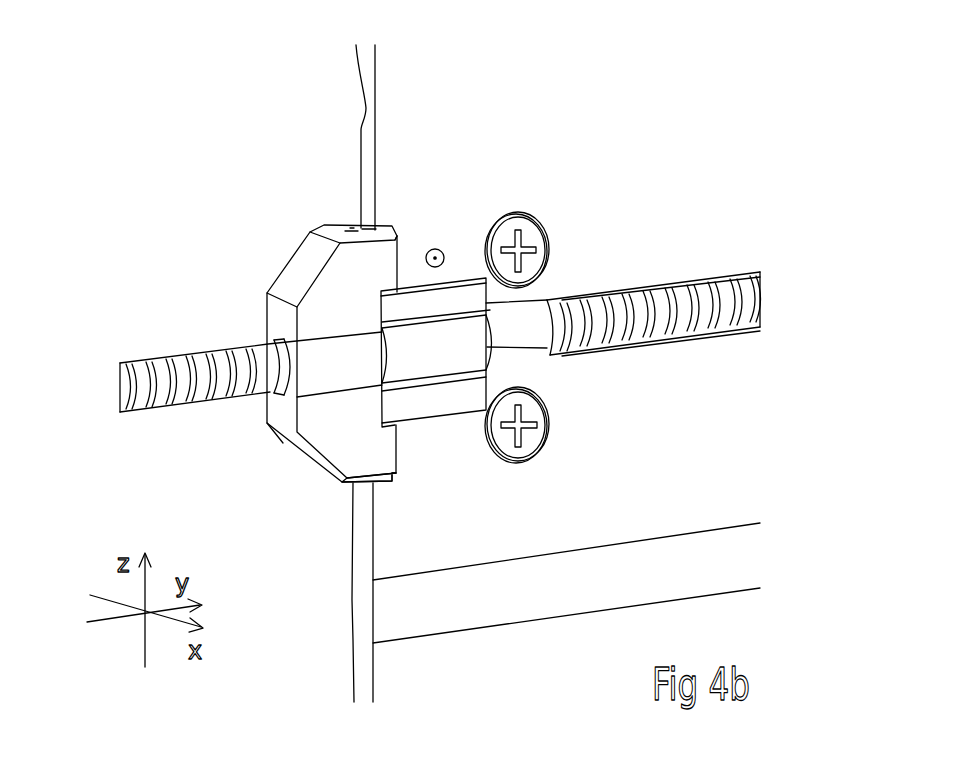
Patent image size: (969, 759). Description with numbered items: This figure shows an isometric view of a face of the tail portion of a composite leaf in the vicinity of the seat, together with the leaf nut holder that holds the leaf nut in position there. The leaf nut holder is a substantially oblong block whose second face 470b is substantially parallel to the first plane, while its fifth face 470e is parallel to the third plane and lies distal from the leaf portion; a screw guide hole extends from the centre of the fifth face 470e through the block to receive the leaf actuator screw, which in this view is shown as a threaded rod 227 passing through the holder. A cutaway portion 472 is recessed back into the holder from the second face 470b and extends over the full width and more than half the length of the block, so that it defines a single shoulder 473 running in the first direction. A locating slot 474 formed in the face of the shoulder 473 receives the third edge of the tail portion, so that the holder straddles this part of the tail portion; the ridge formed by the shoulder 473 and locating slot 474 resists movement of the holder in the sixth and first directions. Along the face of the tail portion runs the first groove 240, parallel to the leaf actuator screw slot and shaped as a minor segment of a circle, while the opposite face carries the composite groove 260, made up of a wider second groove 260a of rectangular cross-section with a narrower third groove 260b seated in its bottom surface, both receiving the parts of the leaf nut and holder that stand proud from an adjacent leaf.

The composite groove 260 is at (216, 76).
The second groove 260a is at (364, 142).
The third groove 260b is at (367, 94).
The locating slot 474 is at (377, 227).
The cutaway portion 472 is at (437, 248).
The threaded rod 227 is at (542, 303).
The fifth face 470e is at (275, 317).
The second face 470b is at (378, 450).
The shoulder 473 is at (402, 463).
The first groove 240 is at (408, 607).